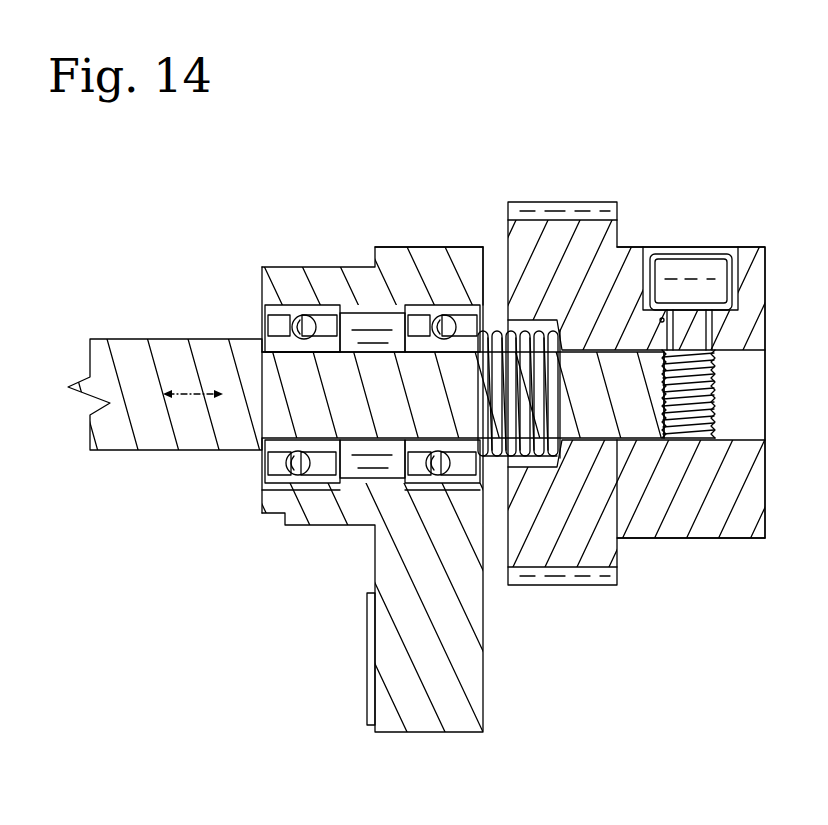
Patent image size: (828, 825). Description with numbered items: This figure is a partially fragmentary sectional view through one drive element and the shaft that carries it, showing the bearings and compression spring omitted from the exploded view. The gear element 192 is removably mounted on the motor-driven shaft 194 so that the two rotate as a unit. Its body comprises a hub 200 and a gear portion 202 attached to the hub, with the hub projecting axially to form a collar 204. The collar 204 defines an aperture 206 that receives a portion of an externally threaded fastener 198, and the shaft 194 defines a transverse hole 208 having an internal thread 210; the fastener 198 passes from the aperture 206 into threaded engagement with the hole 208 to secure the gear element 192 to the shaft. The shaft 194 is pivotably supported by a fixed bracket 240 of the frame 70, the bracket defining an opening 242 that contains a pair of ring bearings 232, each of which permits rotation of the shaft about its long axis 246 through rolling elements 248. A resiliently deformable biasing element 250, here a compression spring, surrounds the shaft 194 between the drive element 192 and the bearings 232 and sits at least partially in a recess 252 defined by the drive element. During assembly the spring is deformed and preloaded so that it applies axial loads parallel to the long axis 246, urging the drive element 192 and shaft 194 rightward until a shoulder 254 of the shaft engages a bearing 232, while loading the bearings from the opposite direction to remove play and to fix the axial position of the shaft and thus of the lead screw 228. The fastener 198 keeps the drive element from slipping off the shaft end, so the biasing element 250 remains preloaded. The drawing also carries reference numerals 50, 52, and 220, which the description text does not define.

The roller assembly 50 is at (414, 106).
The end cap assembly 52 is at (565, 134).
The frame 70 is at (385, 236).
The gear element 192 is at (568, 168).
The motor-driven shaft 194 is at (178, 337).
The externally threaded fastener 198 is at (722, 346).
The hub 200 is at (635, 541).
The gear portion 202 is at (571, 587).
The collar 204 is at (717, 541).
The aperture 206 is at (662, 320).
The hole 208 is at (704, 404).
The internal thread 210 is at (681, 432).
The bearing housing 220 is at (414, 140).
The lead screw 228 is at (91, 332).
The ring bearings 232 is at (300, 305).
The fixed bracket 240 is at (467, 247).
The opening 242 is at (447, 492).
The long axis 246 is at (200, 397).
The rolling elements 248 is at (298, 342).
The biasing element 250 is at (562, 400).
The recess 252 is at (546, 462).
The shoulder 254 is at (263, 458).